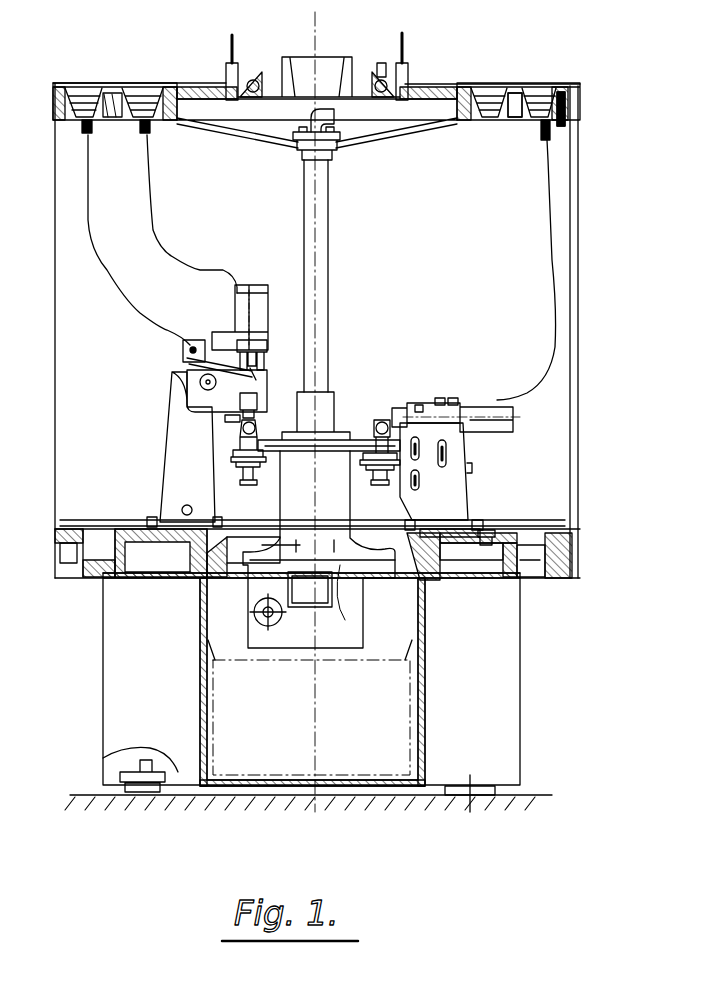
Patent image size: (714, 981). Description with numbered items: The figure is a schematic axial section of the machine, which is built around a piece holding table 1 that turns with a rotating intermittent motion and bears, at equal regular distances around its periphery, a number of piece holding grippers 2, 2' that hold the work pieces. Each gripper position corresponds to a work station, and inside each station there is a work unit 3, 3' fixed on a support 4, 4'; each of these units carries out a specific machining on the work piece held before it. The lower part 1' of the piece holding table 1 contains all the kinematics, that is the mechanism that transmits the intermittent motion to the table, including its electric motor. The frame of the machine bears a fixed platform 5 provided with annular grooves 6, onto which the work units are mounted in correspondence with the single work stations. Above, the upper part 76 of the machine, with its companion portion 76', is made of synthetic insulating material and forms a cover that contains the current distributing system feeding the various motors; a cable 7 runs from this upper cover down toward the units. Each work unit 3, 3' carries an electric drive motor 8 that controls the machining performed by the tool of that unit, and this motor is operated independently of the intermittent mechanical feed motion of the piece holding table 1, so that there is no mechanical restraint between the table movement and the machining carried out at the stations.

The piece holding table 1 is at (321, 387).
The lower part of the piece holding table 1' is at (337, 682).
The piece holding gripper 2 is at (259, 439).
The piece holding gripper 2' is at (394, 420).
The work unit 3 is at (238, 363).
The work unit 3' is at (456, 394).
The support 4 is at (165, 449).
The support 4' is at (460, 476).
The fixed platform 5 is at (570, 537).
The annular grooves 6 is at (487, 537).
The cable 7 is at (553, 265).
The electric drive motor 8 is at (250, 305).
The upper part of the machine 76 is at (524, 86).
The spring seat 76' is at (588, 92).